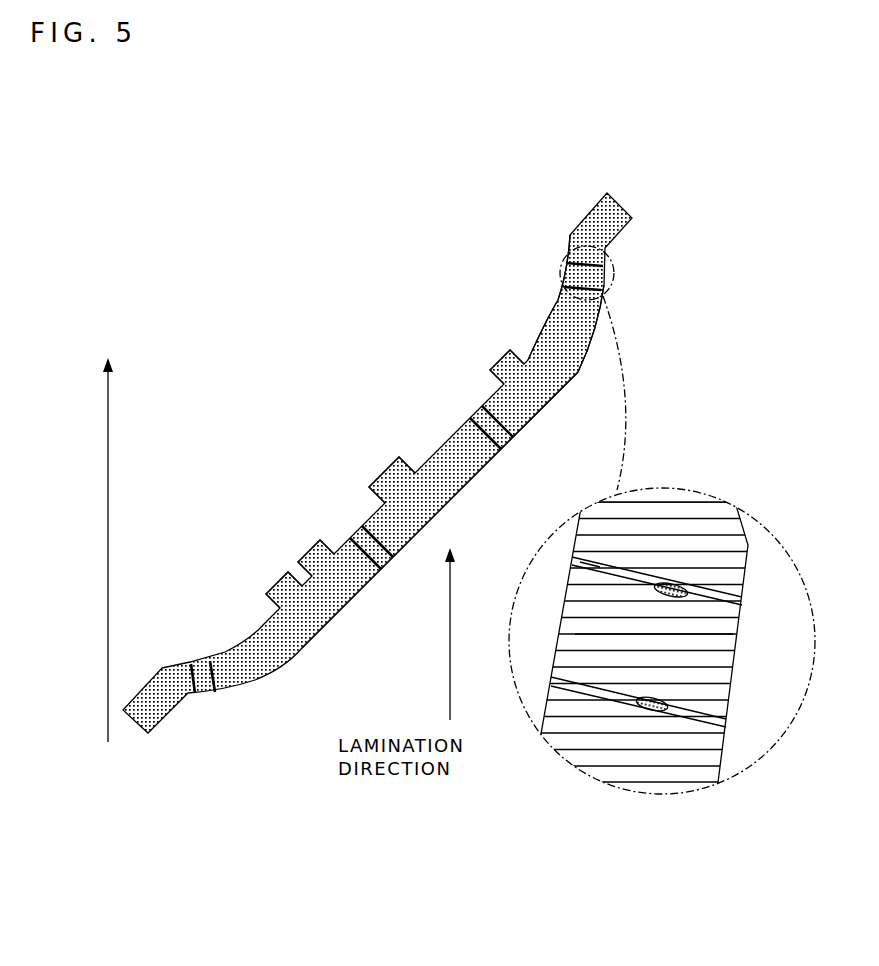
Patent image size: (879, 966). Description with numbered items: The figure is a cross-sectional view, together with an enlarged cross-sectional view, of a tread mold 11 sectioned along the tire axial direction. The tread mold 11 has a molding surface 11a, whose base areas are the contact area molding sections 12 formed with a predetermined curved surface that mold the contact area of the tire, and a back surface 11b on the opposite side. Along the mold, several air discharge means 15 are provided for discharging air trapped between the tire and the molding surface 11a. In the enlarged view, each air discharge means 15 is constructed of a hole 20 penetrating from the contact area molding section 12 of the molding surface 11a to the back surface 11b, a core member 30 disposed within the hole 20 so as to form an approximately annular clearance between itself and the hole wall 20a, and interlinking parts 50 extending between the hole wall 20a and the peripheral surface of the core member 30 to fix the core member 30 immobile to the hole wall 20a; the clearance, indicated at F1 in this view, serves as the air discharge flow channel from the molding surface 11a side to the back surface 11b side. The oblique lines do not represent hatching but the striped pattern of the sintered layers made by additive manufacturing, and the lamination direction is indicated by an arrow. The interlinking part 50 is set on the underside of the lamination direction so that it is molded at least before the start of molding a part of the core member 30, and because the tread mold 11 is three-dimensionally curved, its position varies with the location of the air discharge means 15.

The tread mold 11 is at (637, 218).
The molding surface 11a is at (540, 337).
The back surface 11b is at (542, 397).
The contact area molding section 12 is at (553, 312).
The air discharge means 15 is at (560, 267).
The hole 20 is at (563, 680).
The hole wall 20a is at (607, 570).
The core member 30 is at (563, 637).
The interlinking part 50 is at (713, 593).
The force direction F1 is at (602, 568).